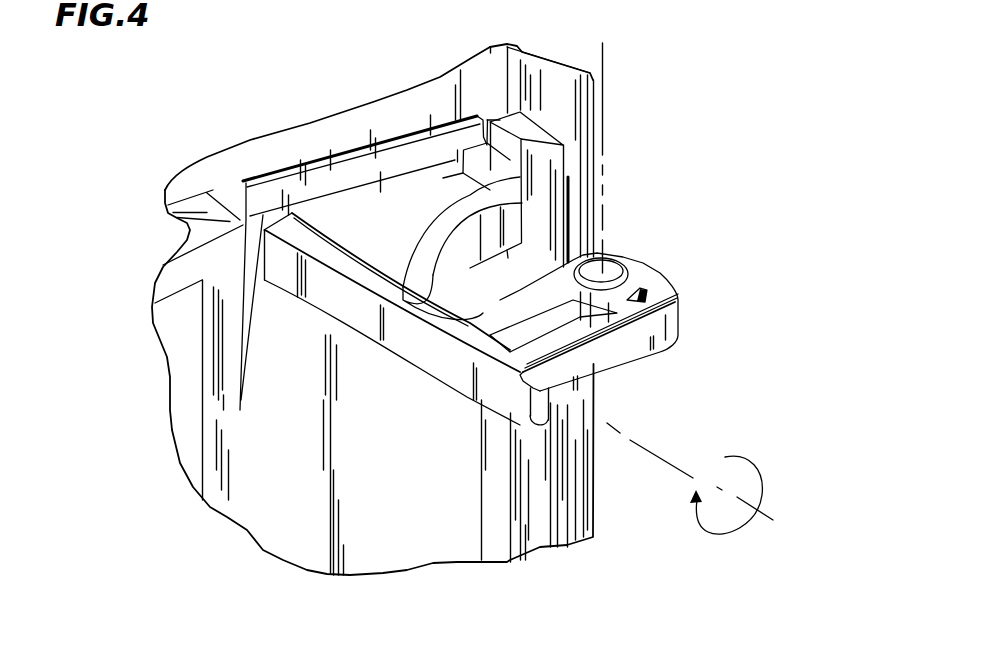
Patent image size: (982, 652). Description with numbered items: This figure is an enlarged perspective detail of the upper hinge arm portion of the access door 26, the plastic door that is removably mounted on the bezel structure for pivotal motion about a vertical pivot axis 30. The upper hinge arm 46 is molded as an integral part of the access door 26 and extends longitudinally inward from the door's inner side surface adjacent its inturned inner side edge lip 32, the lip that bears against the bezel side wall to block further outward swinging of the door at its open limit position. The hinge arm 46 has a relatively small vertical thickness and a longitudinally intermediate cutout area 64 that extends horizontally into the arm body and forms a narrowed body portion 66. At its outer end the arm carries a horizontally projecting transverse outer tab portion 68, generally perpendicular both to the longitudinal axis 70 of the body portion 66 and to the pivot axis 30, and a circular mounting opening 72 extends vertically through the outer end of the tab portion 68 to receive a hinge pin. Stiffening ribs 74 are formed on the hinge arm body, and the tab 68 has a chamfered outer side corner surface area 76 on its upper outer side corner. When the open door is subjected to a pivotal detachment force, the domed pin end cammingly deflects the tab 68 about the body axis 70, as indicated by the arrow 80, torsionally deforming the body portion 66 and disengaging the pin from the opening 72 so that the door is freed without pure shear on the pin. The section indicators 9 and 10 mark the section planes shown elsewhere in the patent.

The section line 9- 9 is at (823, 320).
The section line 10- 10 is at (247, 357).
The access door 26 is at (258, 557).
The pivot axis 30 is at (605, 67).
The inner side edge lip 32 is at (533, 77).
The upper hinge arm member 46 is at (355, 312).
The cutout area 64 is at (485, 250).
The narrowed body portion 66 is at (520, 265).
The outer tab portion 68 is at (662, 280).
The longitudinal axis 70 is at (773, 513).
The mounting opening 72 is at (623, 260).
The stiffening ribs 74 is at (540, 427).
The chamfered outer side corner surface area 76 is at (623, 337).
The arrows 80 is at (760, 475).